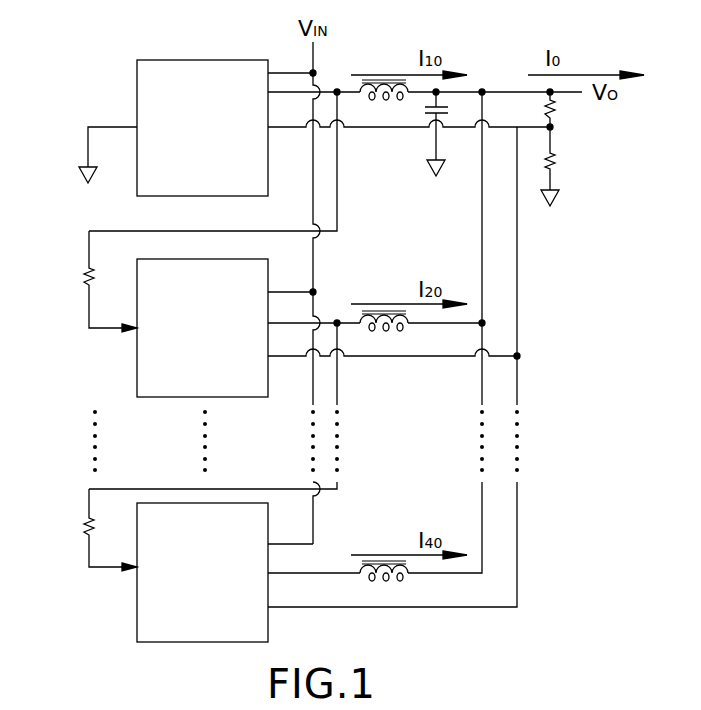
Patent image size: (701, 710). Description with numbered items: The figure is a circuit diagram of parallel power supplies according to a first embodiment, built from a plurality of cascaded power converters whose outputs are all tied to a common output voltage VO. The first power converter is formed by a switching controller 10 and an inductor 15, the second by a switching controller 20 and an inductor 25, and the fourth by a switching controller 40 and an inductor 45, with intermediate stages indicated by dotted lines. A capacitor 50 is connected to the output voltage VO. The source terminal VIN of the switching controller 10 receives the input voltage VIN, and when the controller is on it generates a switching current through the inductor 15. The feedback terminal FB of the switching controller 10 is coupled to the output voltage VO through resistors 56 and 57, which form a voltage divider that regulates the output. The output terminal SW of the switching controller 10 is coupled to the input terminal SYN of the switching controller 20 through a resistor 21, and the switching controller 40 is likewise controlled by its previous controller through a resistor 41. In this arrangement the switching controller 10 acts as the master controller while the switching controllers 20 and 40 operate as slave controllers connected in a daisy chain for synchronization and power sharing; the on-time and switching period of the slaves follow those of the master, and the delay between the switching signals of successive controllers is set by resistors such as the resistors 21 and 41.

The switching controller 10 is at (140, 60).
The inductor 15 is at (383, 100).
The capacitor 50 is at (427, 113).
The resistor 56 is at (556, 107).
The resistor 57 is at (556, 160).
The switching controller 20 is at (190, 397).
The resistor 21 is at (85, 281).
The inductor 25 is at (383, 331).
The switching controller 40 is at (137, 627).
The resistor 41 is at (85, 531).
The inductor 45 is at (383, 581).